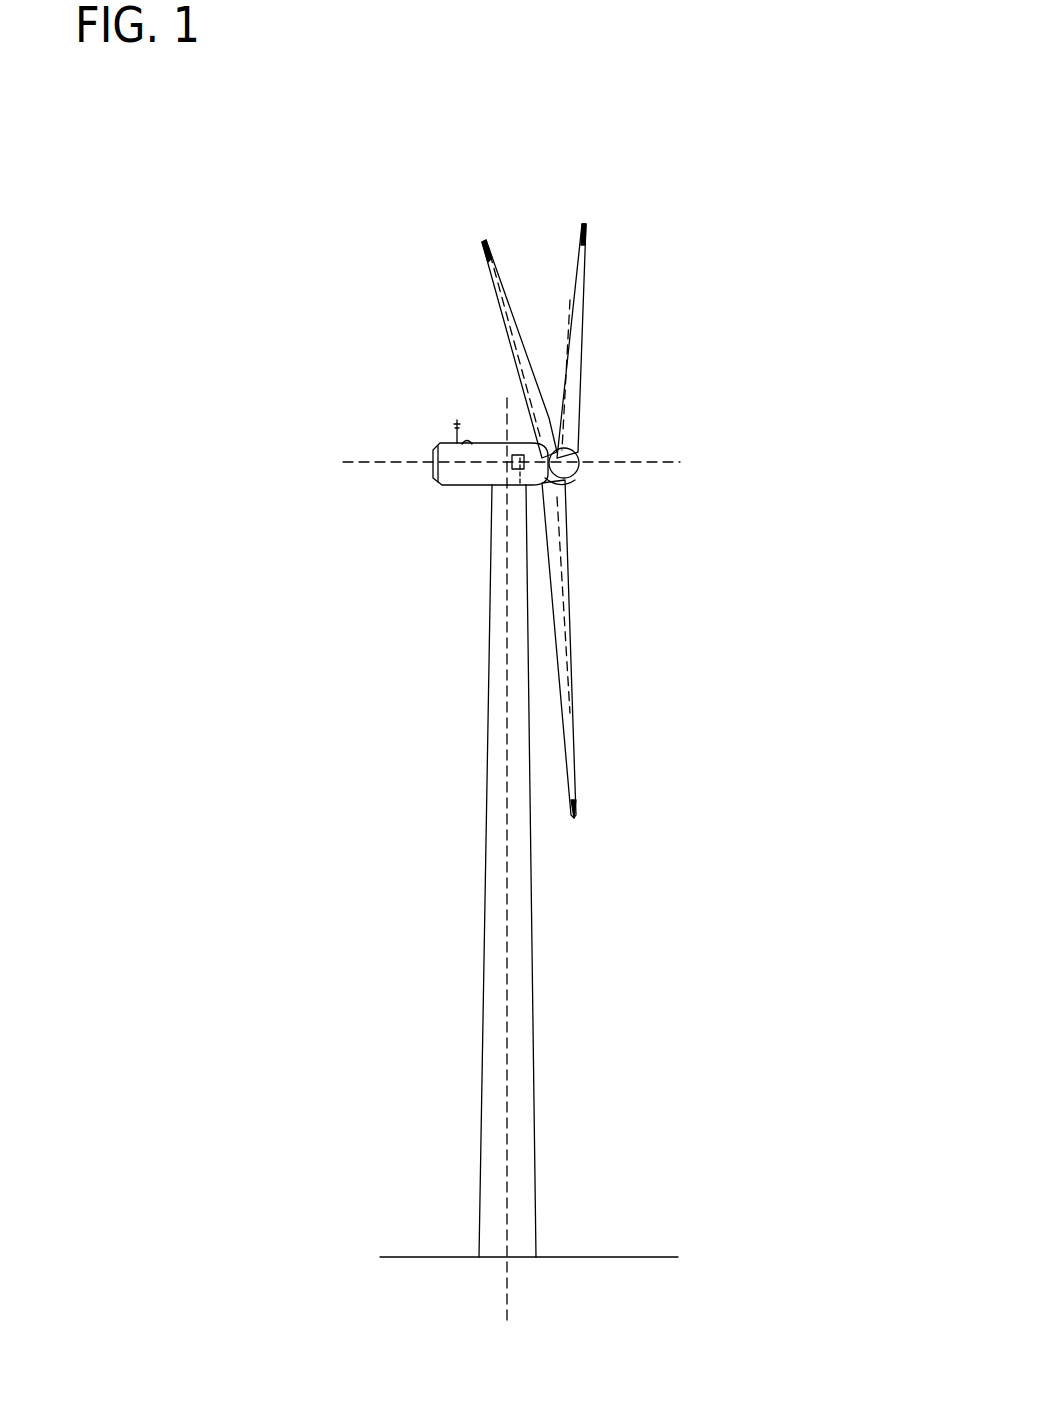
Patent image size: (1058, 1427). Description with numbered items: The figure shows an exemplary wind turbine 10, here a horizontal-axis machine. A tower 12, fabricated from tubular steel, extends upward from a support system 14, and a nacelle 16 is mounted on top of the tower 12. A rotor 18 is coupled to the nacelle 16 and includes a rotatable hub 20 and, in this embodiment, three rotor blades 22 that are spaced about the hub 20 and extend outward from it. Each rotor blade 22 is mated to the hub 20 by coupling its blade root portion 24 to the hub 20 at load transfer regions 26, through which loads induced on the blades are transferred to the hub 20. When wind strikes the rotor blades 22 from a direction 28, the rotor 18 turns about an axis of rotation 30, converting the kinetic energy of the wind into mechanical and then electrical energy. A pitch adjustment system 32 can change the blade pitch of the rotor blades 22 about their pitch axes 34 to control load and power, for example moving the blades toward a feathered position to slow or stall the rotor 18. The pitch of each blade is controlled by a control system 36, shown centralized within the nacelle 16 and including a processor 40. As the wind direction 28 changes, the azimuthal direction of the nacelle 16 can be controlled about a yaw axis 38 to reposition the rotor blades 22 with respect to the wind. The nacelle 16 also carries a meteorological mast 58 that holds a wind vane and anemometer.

The wind turbine 10 is at (262, 242).
The tower 12 is at (481, 1028).
The support system 14 is at (436, 1257).
The nacelle 16 is at (462, 485).
The rotor 18 is at (595, 362).
The hub 20 is at (580, 456).
The rotor blade 22 is at (502, 311).
The blade root portion 24 is at (568, 570).
The load transfer regions 26 is at (556, 487).
The direction 28 is at (917, 462).
The axis of rotation 30 is at (650, 466).
The pitch adjustment system 32 is at (538, 500).
The pitch axes 34 is at (478, 242).
The control system 36 is at (512, 485).
The yaw axis 38 is at (507, 915).
The processor 40 is at (509, 422).
The meteorological mast 58 is at (455, 432).